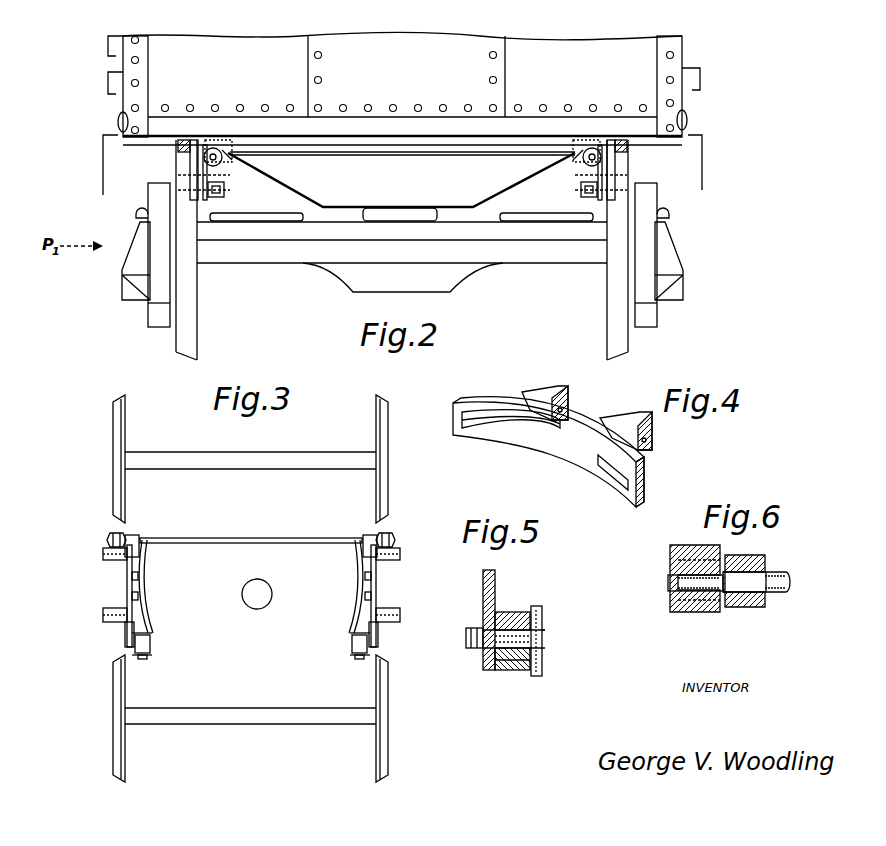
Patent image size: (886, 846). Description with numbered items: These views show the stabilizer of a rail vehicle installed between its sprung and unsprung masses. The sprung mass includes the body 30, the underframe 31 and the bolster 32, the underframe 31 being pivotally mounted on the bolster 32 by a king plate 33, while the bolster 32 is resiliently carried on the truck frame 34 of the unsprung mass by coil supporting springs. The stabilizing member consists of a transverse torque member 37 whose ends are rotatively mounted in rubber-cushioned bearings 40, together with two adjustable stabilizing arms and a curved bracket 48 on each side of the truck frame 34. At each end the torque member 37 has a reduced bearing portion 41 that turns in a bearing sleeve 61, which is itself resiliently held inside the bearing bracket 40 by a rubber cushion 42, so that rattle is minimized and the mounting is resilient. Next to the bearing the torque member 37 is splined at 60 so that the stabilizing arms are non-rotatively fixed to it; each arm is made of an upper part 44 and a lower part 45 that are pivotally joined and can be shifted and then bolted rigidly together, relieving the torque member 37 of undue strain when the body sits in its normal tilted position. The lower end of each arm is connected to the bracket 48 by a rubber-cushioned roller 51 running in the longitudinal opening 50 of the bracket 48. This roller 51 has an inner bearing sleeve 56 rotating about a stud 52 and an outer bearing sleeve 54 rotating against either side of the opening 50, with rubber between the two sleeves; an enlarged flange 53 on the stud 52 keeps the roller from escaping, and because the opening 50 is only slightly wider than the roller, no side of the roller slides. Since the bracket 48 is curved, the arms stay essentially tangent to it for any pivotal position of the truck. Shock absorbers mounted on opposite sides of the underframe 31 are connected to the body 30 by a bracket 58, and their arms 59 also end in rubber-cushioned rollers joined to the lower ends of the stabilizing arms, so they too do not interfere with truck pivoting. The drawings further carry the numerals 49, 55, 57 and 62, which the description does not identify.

In FIG. 2, the body 30 is at (419, 79).
In FIG. 2, the underframe 31 is at (512, 182).
In FIG. 2, the bolster 32 is at (455, 280).
In FIG. 2, the king plate 33 is at (410, 208).
In FIG. 3, the king plate 33 is at (270, 600).
In FIG. 2, the truck frame 34 is at (148, 318).
In FIG. 3, the truck frame 34 is at (250, 588).
In FIG. 2, the transverse torque member 37 is at (372, 152).
In FIG. 3, the transverse torque member 37 is at (290, 538).
In FIG. 6, the transverse torque member 37 is at (786, 592).
In FIG. 2, the rubber-cushioned bearing 40 is at (178, 146).
In FIG. 3, the rubber-cushioned bearing 40 is at (112, 536).
In FIG. 6, the rubber-cushioned bearing 40 is at (672, 548).
In FIG. 6, the reduced bearing portion 41 is at (675, 583).
In FIG. 6, the rubber cushion 42 is at (672, 566).
In FIG. 2, the upper part 44 is at (196, 165).
In FIG. 3, the upper part 44 is at (130, 560).
In FIG. 6, the upper part 44 is at (745, 607).
In FIG. 2, the lower part 45 is at (207, 176).
In FIG. 3, the lower part 45 is at (127, 575).
In FIG. 5, the lower part 45 is at (495, 588).
In FIG. 2, the bracket 48 is at (224, 192).
In FIG. 3, the bracket 48 is at (146, 550).
In FIG. 4, the bracket 48 is at (560, 447).
In FIG. 3, the lug 49 is at (103, 554).
In FIG. 4, the lug 49 is at (624, 420).
In FIG. 4, the longitudinal opening 50 is at (476, 415).
In FIG. 3, the rubber-cushioned roller 51 is at (138, 576).
In FIG. 5, the rubber-cushioned roller 51 is at (515, 670).
In FIG. 5, the stud 52 is at (537, 650).
In FIG. 5, the enlarged flange 53 is at (542, 612).
In FIG. 5, the outer bearing sleeve 54 is at (508, 612).
In FIG. 5, the pin 55 is at (524, 672).
In FIG. 5, the inner bearing sleeve 56 is at (520, 640).
In FIG. 2, the roller pin 57 is at (232, 160).
In FIG. 3, the roller pin 57 is at (143, 659).
In FIG. 2, the bracket 58 is at (225, 140).
In FIG. 3, the bracket 58 is at (150, 643).
In FIG. 3, the arms 59 is at (127, 635).
In FIG. 6, the splined portion 60 is at (785, 572).
In FIG. 6, the bearing sleeve 61 is at (676, 593).
In FIG. 3, the stop 62 is at (138, 596).